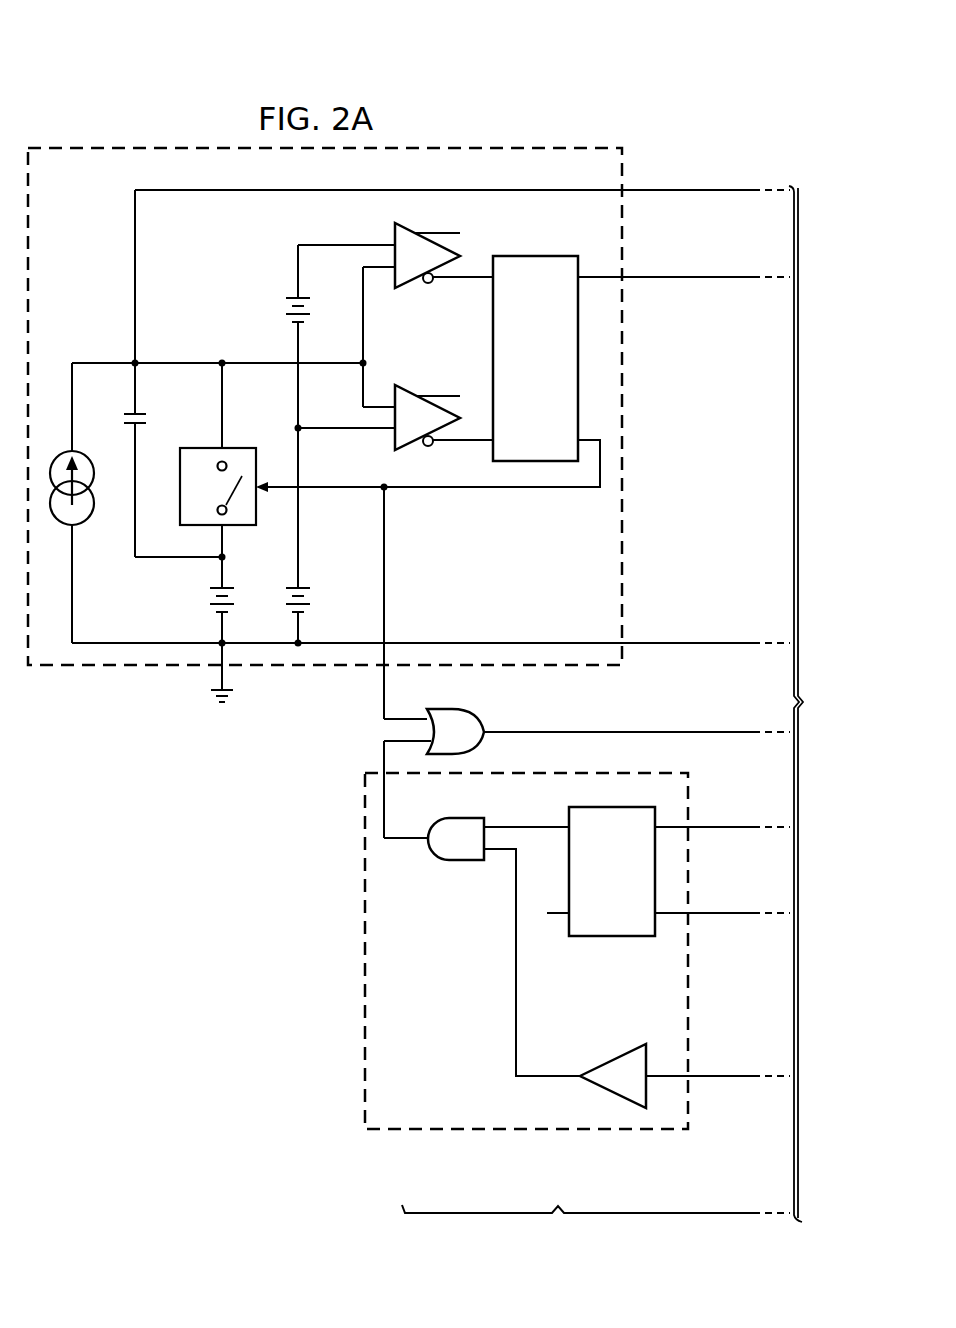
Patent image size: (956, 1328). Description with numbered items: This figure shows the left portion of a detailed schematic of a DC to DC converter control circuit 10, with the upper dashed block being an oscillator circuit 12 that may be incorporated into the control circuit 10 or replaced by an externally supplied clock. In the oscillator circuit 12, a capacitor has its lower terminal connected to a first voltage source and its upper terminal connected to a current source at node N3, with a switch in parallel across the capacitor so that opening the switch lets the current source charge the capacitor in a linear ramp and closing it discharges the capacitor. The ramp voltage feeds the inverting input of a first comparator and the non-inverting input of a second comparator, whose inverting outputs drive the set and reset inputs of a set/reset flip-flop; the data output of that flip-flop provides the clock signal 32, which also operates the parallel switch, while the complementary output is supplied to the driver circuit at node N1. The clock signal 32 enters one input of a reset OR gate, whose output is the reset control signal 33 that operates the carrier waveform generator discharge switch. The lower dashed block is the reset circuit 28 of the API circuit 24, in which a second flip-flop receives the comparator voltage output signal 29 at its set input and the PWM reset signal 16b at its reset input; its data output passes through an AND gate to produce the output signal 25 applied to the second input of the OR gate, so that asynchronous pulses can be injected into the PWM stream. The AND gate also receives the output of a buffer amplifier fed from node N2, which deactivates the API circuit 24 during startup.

The control circuit 10 is at (132, 49).
The oscillator circuit 12 is at (181, 147).
The API circuit 24 is at (596, 1233).
The output signal 25 is at (405, 840).
The reset circuit 28 is at (361, 967).
The comparator voltage output signal 29 is at (720, 829).
The clock signal 32 is at (384, 568).
The reset control signal 33 is at (720, 733).
The PWM reset signal 16b is at (720, 915).
The node N1 is at (698, 271).
The node N2 is at (714, 1086).
The node N3 is at (698, 184).